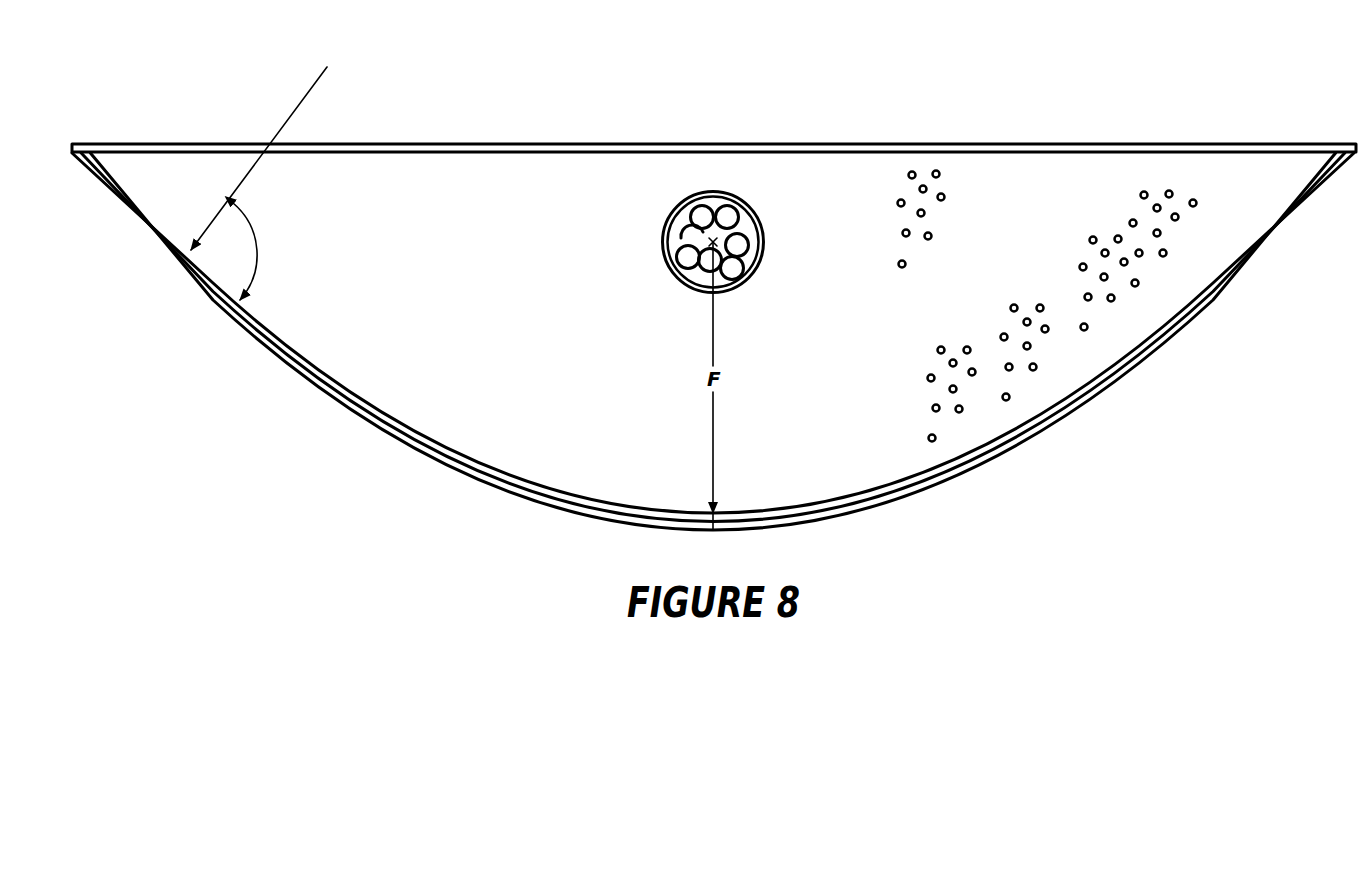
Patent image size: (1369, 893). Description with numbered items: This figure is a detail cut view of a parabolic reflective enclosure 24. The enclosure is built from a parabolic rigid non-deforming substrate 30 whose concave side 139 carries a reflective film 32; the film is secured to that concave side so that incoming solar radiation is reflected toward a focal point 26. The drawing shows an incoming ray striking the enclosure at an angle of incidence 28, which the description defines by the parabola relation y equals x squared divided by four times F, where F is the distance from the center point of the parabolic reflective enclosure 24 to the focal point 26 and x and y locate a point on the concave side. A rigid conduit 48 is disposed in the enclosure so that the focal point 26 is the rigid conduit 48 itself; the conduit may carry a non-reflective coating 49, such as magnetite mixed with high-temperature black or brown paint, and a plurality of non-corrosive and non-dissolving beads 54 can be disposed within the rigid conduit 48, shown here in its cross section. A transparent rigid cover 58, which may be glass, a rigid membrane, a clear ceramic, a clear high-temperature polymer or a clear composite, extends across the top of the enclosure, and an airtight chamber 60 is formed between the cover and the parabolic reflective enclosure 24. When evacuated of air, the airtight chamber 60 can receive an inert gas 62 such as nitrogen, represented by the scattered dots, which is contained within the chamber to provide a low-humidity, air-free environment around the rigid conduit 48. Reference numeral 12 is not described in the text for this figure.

The cable bundle 12 is at (711, 241).
The parabolic reflective enclosure 24 is at (713, 341).
The focal point 26 is at (711, 242).
The angle of incidence 28 is at (259, 183).
The parabolic rigid non-deforming substrate 30 is at (1163, 340).
The reflective film 32 is at (396, 420).
The rigid conduit 48 is at (746, 206).
The non-reflective coating 49 is at (754, 277).
The non-corrosive and non-dissolving beads 54 is at (690, 212).
The transparent rigid cover 58 is at (159, 143).
The airtight chamber 60 is at (1076, 170).
The inert gas 62 is at (904, 268).
The concave side 139 is at (346, 393).